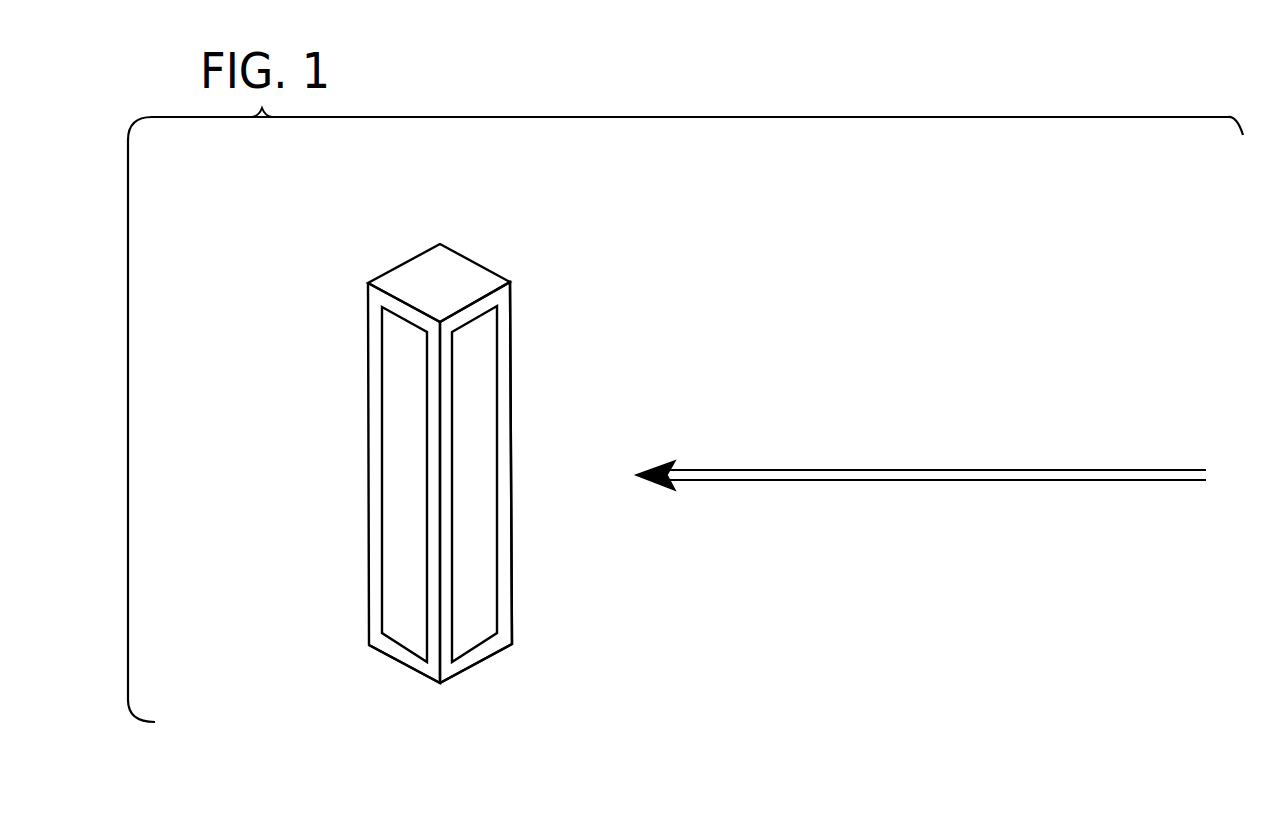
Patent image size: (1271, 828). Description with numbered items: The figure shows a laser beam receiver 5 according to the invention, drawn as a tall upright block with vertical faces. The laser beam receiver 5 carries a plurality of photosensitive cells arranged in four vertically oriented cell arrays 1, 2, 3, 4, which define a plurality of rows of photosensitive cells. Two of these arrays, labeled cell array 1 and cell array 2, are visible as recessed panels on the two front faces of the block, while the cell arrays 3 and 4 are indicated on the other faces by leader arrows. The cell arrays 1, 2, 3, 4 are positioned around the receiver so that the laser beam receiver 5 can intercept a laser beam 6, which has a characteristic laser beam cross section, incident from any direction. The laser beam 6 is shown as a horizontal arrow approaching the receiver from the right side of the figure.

The cell array 1 is at (397, 482).
The cell array 2 is at (467, 482).
The cell array 3 is at (524, 424).
The cell array 4 is at (353, 437).
The laser beam receiver 5 is at (563, 247).
The laser beam 6 is at (882, 480).